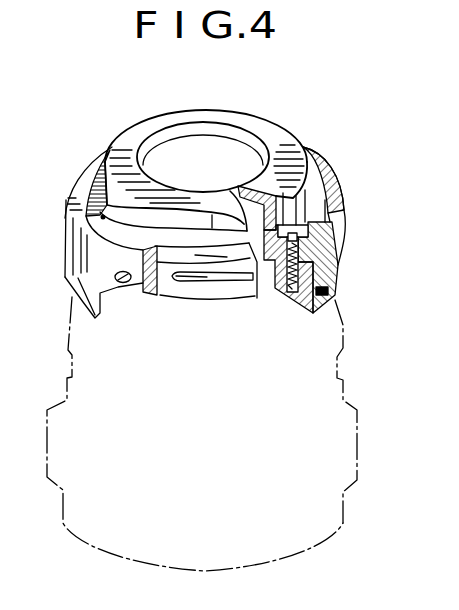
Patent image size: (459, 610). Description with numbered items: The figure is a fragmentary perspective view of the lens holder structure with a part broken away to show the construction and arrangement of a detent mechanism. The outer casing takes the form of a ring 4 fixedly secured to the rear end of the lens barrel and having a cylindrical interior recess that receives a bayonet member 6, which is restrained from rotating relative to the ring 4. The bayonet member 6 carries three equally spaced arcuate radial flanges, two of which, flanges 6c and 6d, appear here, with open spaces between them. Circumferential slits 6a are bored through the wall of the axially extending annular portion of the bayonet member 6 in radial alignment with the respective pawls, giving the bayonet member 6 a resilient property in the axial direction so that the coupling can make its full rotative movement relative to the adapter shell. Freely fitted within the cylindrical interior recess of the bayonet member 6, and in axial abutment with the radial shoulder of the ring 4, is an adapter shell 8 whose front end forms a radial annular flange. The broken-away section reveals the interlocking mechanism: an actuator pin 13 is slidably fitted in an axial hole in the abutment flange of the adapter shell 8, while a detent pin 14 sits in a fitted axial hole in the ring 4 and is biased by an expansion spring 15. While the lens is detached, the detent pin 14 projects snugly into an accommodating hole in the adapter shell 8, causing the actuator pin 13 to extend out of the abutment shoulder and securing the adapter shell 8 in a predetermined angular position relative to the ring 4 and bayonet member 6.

The ring 4 is at (347, 233).
The bayonet member 6 is at (318, 188).
The circumferential slits 6a is at (195, 280).
The arcuate radial flange 6c is at (173, 253).
The arcuate radial flange 6d is at (103, 217).
The adapter shell 8 is at (283, 140).
The actuator pin 13 is at (323, 191).
The detent pin 14 is at (293, 270).
The expansion spring 15 is at (333, 293).